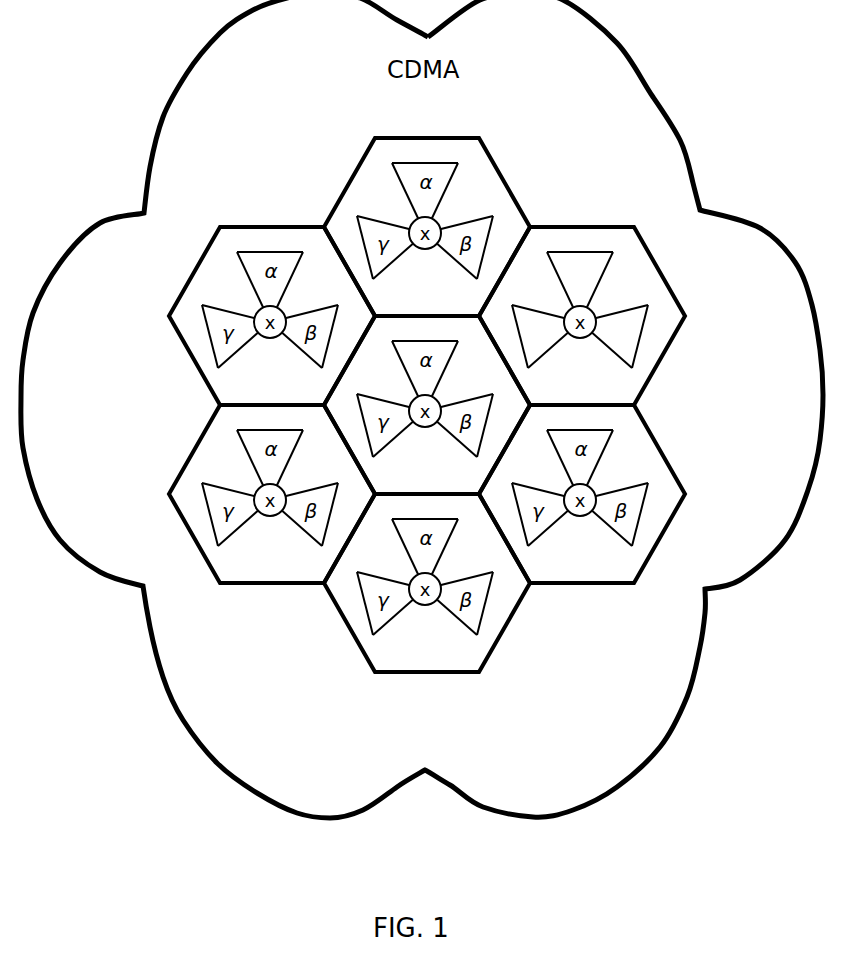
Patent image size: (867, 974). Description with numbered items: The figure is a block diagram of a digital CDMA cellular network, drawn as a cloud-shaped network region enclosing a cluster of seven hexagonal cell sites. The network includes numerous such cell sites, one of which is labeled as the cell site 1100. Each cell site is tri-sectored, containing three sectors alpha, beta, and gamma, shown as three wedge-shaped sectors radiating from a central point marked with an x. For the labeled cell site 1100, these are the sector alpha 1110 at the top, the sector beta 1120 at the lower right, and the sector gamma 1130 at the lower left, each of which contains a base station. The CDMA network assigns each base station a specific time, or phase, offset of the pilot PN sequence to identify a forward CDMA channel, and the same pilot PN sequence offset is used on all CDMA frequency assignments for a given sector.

The cell site 1100 is at (542, 226).
The sector alpha 1110 is at (588, 251).
The sector beta 1120 is at (643, 328).
The sector gamma 1130 is at (542, 350).